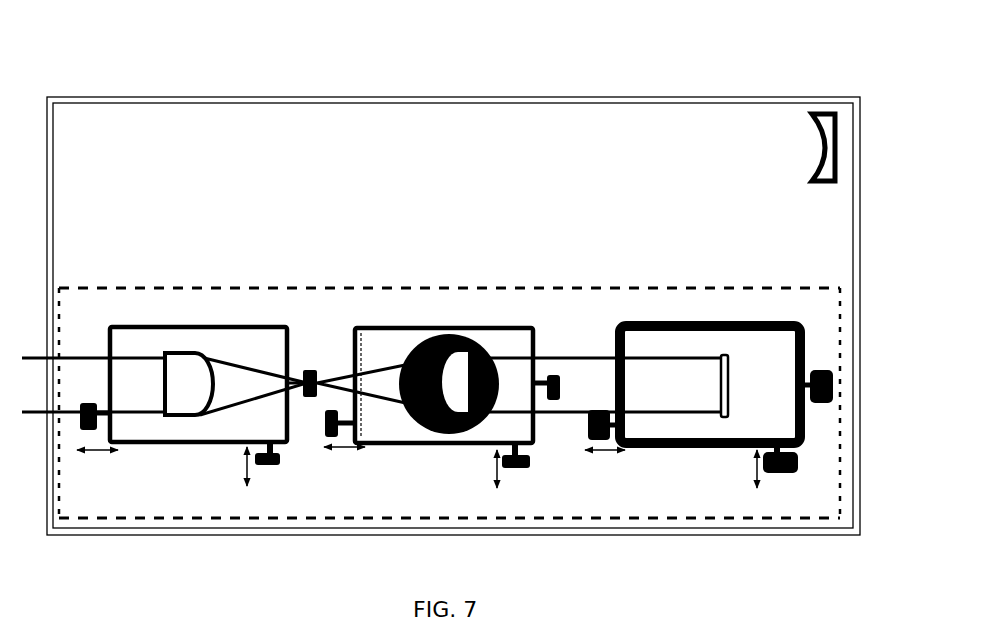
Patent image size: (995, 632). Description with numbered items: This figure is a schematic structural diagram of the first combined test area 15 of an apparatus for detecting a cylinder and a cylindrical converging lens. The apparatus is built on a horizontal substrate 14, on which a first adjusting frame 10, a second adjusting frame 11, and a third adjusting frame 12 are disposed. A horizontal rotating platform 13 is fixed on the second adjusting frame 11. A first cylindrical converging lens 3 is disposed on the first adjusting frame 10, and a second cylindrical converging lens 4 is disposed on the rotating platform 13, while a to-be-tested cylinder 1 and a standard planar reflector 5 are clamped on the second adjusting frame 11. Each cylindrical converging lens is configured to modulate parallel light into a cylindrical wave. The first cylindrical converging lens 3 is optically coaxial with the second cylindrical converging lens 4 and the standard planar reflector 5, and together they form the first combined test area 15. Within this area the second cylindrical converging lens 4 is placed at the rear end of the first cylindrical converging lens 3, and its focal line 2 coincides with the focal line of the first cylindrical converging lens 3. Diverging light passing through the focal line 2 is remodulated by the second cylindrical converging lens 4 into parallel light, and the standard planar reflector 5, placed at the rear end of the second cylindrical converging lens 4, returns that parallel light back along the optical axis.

The to-be-tested cylinder 1 is at (828, 120).
The focal line 2 is at (318, 380).
The first cylindrical converging lens 3 is at (178, 377).
The second cylindrical converging lens 4 is at (462, 367).
The standard planar reflector 5 is at (728, 358).
The first adjusting frame 10 is at (138, 338).
The second adjusting frame 11 is at (383, 342).
The third adjusting frame 12 is at (655, 343).
The rotating platform 13 is at (457, 335).
The horizontal substrate 14 is at (288, 122).
The first combined test area 15 is at (73, 285).